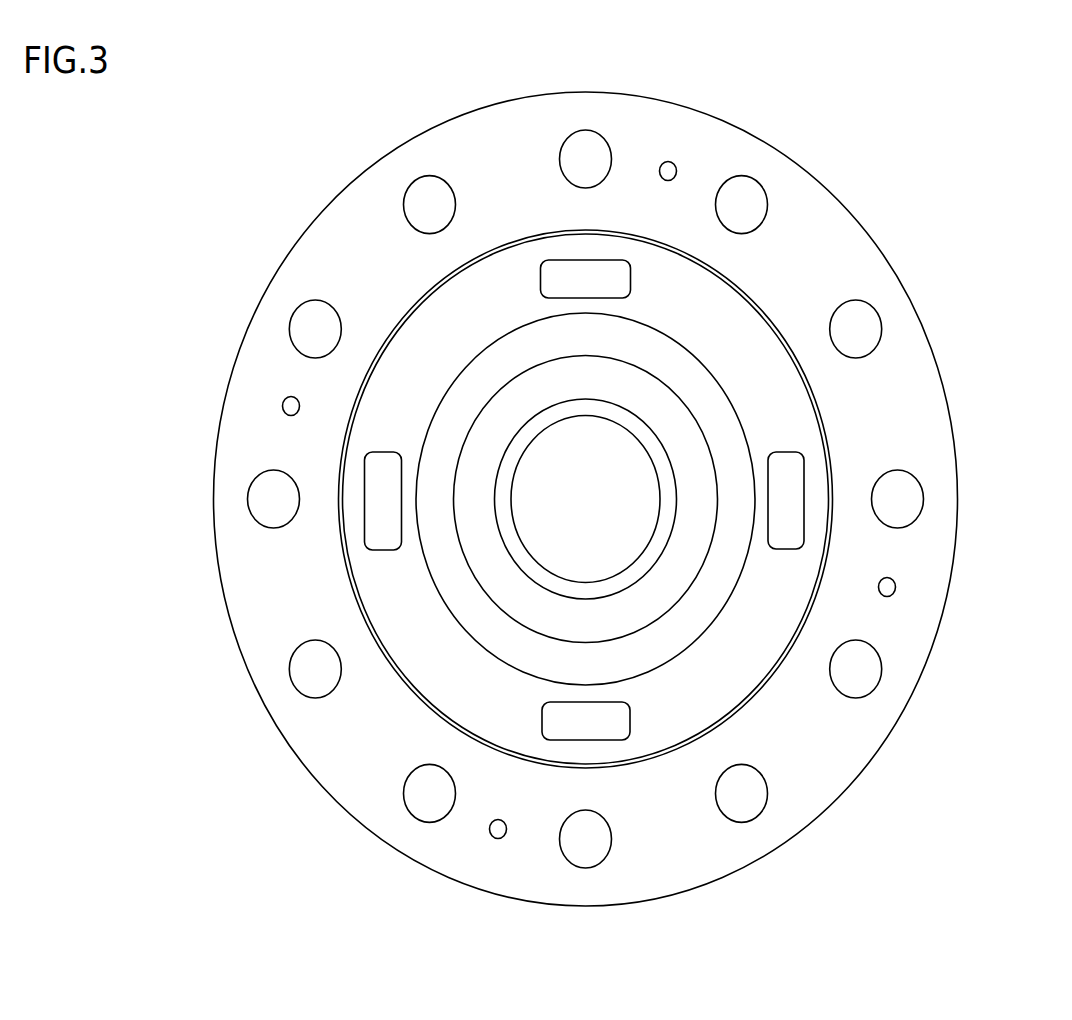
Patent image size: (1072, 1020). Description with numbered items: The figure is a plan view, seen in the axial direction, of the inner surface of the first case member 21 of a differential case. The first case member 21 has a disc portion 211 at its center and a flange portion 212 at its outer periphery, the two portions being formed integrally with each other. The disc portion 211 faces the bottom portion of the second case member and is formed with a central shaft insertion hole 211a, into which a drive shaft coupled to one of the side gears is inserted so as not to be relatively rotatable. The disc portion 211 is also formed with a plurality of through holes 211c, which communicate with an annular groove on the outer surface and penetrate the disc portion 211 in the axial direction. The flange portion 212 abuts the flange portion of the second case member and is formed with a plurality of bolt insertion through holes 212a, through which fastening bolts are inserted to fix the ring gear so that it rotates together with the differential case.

The first case member 21 is at (593, 504).
The disc portion 211 is at (593, 504).
The shaft insertion hole 211a is at (622, 428).
The through holes 211c is at (555, 273).
The flange portion 212 is at (611, 499).
The bolt insertion through holes 212a is at (863, 327).